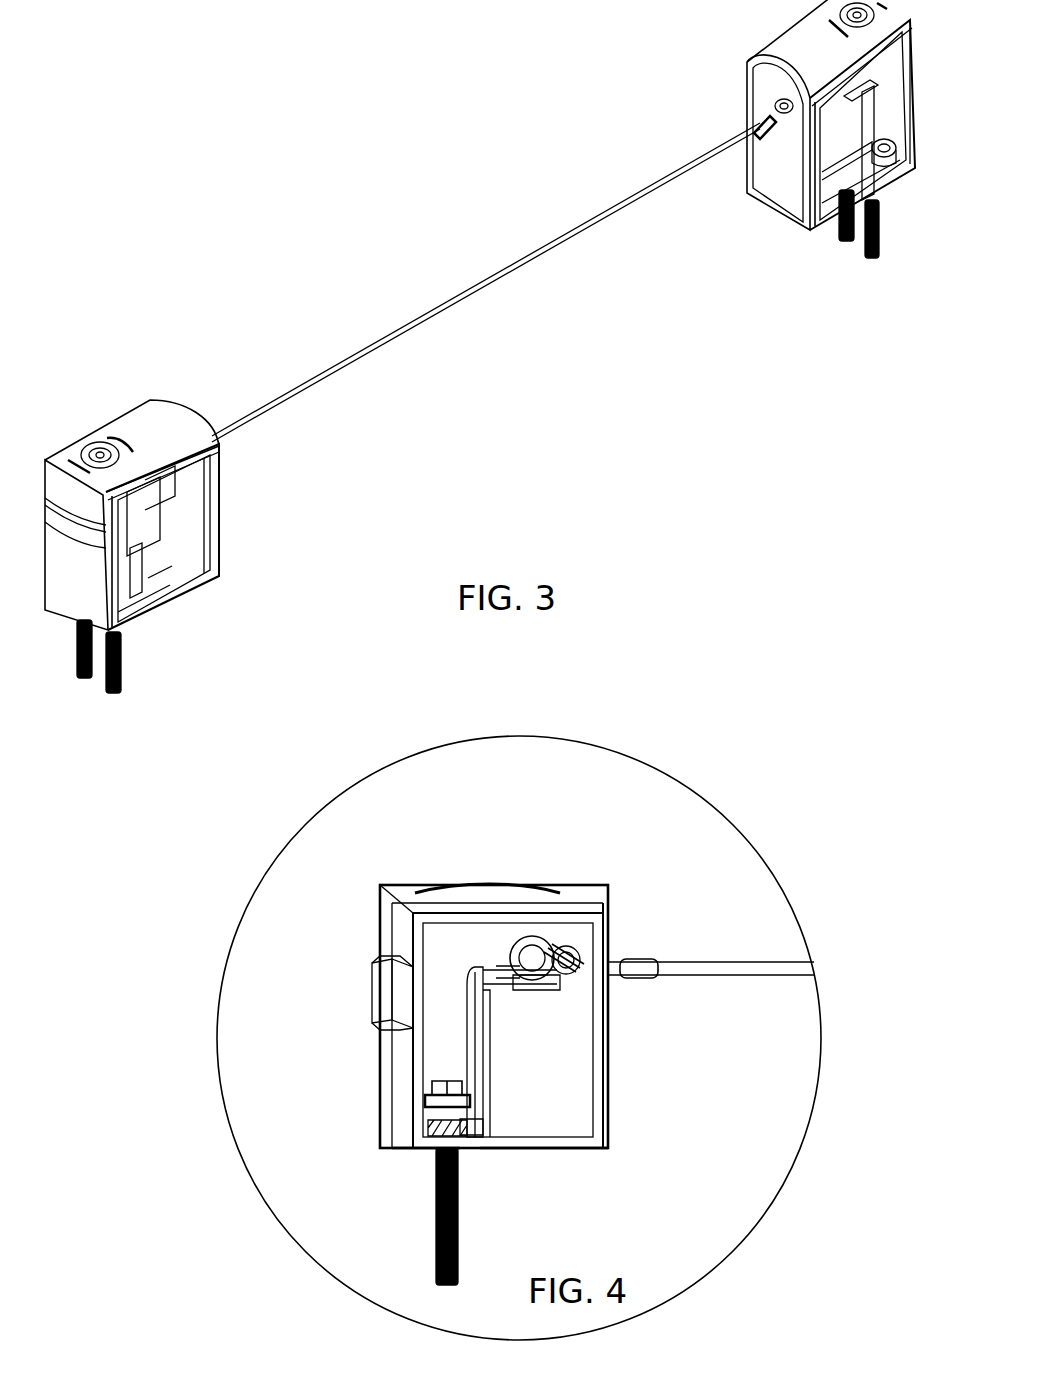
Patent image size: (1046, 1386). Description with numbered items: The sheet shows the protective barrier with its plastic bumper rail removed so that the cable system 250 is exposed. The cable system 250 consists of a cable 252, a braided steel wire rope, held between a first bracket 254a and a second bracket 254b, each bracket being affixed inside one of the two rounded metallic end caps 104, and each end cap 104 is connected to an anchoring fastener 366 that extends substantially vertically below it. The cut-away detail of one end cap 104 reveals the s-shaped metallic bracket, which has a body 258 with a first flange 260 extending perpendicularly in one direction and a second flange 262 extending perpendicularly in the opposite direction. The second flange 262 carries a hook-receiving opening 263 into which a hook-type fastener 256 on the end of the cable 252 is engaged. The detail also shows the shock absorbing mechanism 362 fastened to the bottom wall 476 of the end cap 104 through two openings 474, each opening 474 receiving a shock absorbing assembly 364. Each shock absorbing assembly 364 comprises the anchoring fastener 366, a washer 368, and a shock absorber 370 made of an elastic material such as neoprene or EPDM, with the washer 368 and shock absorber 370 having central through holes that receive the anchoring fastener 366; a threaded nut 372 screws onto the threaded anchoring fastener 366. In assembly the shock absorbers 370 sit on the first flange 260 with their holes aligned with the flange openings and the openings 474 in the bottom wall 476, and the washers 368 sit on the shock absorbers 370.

In FIG. 3, the rounded metallic end cap 104 is at (180, 598).
In FIG. 4, the rounded metallic end cap 104 is at (505, 885).
In FIG. 3, the cable system 250 is at (472, 378).
In FIG. 4, the cable system 250 is at (644, 914).
In FIG. 3, the cable 252 is at (430, 314).
In FIG. 4, the cable 252 is at (700, 962).
In FIG. 4, the first bracket 254a is at (490, 1040).
In FIG. 3, the second bracket 254b is at (868, 152).
In FIG. 4, the fastener 256 is at (540, 937).
In FIG. 4, the body 258 is at (482, 1080).
In FIG. 4, the first flange 260 is at (486, 1135).
In FIG. 4, the second flange 262 is at (503, 966).
In FIG. 4, the hook-receiving opening 263 is at (528, 985).
In FIG. 4, the shock absorbing mechanism 362 is at (437, 1046).
In FIG. 4, the shock absorbing assembly 364 is at (400, 1077).
In FIG. 3, the anchoring fastener 366 is at (86, 682).
In FIG. 4, the anchoring fastener 366 is at (460, 1210).
In FIG. 4, the washer 368 is at (432, 1101).
In FIG. 4, the shock absorber 370 is at (436, 1126).
In FIG. 4, the threaded nut 372 is at (432, 1085).
In FIG. 4, the opening 474 is at (435, 1150).
In FIG. 4, the bottom wall 476 is at (540, 1150).